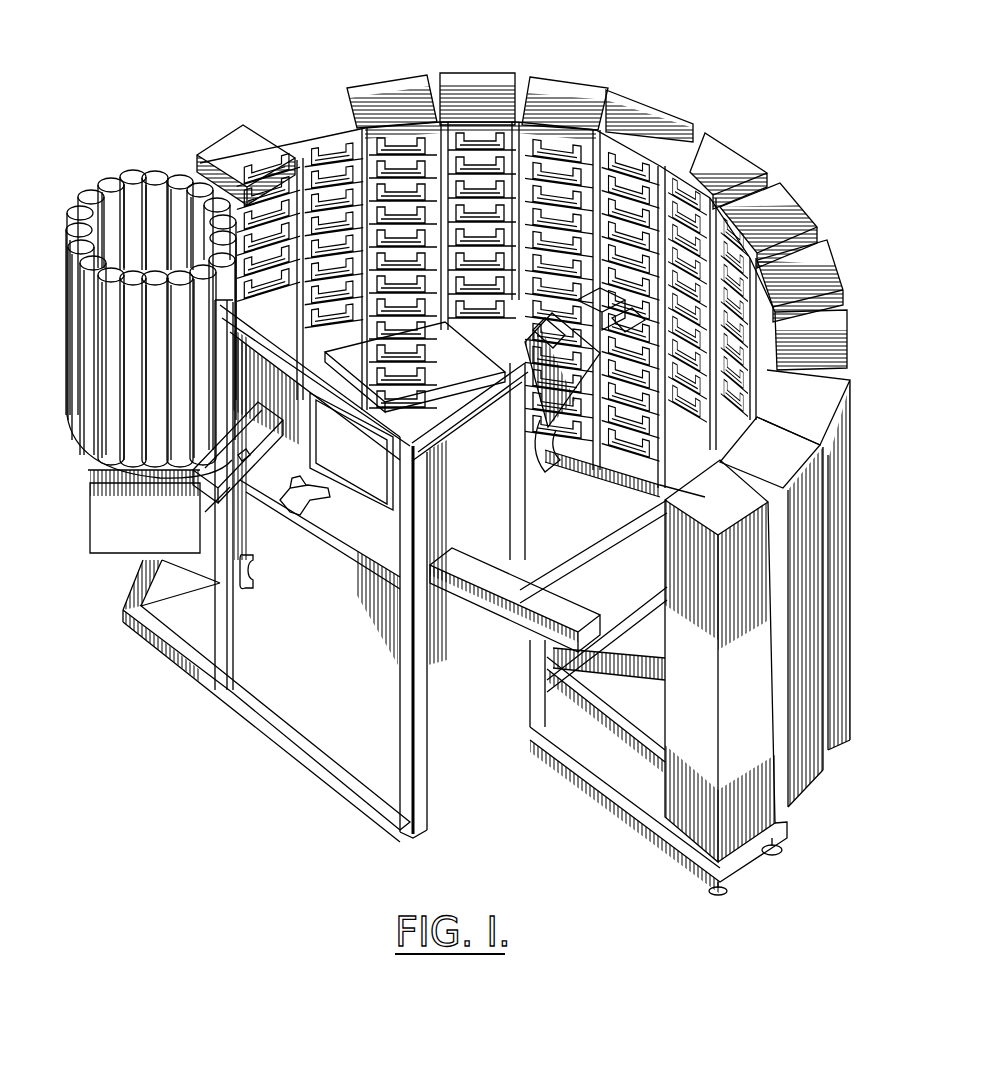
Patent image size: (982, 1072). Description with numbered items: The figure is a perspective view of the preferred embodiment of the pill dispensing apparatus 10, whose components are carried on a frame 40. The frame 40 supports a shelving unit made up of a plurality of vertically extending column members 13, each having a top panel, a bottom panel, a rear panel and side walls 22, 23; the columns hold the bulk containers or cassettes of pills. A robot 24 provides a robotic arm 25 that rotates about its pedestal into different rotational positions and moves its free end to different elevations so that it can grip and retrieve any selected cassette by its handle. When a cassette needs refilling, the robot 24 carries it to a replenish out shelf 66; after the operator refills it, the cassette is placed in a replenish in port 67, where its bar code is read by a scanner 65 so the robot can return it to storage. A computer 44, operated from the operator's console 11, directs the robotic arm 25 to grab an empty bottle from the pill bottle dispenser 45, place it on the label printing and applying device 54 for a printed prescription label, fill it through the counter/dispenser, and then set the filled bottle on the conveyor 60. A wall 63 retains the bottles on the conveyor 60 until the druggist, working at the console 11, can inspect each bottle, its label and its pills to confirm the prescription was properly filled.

The pill dispensing apparatus 10 is at (630, 96).
The operator's console 11 is at (373, 763).
The column members 13 is at (226, 165).
The side wall 22 is at (843, 303).
The side wall 23 is at (247, 127).
The robot 24 is at (550, 442).
The robotic arm 25 is at (476, 364).
The frame 40 is at (193, 650).
The computer 44 is at (373, 487).
The pill bottle dispenser 45 is at (110, 183).
The label printing and applying device 54 is at (127, 523).
The conveyor 60 is at (517, 608).
The wall 63 is at (543, 657).
The scanner 65 is at (293, 497).
The replenish out shelf 66 is at (217, 500).
The replenish in port 67 is at (205, 518).